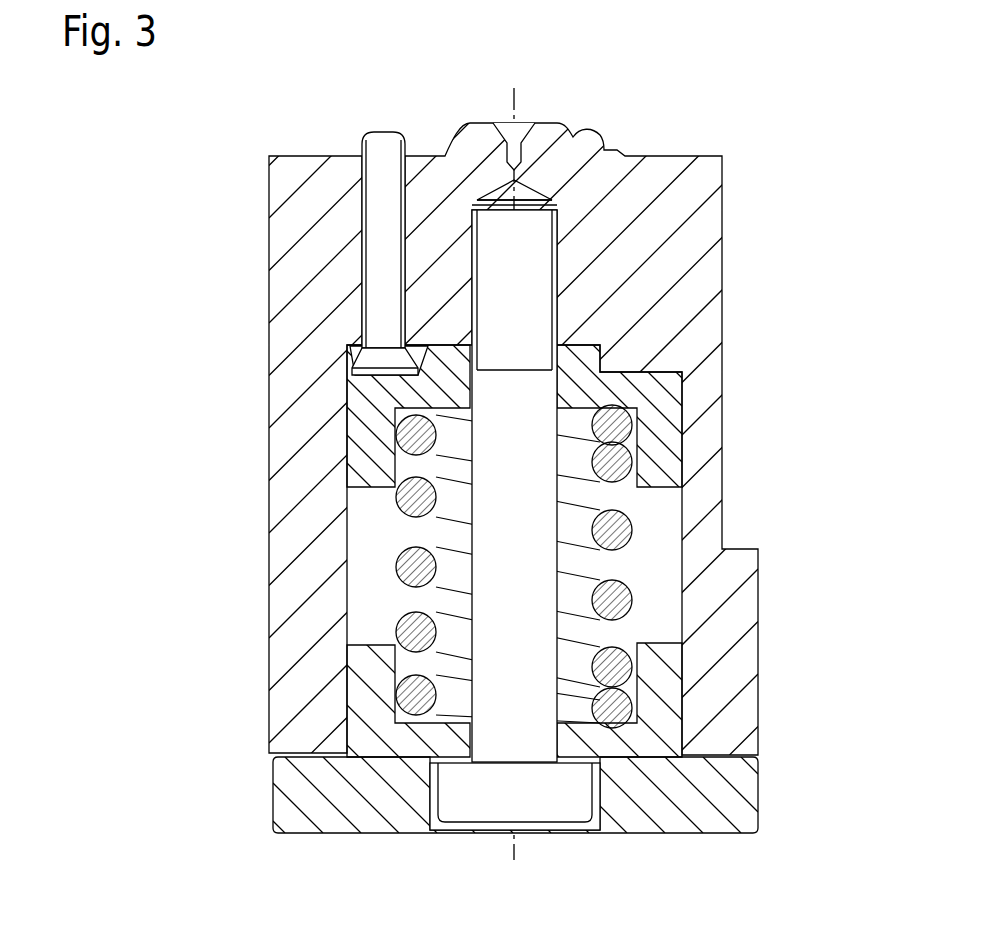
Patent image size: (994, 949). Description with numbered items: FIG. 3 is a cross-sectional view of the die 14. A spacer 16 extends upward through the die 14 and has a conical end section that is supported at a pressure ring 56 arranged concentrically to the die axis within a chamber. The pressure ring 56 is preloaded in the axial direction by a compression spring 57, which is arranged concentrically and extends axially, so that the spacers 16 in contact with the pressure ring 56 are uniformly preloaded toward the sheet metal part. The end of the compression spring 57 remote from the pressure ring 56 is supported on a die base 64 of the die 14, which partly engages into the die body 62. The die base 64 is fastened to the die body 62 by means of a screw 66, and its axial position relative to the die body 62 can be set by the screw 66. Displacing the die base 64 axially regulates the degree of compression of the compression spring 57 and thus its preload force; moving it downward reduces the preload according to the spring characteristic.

The die 14 is at (198, 831).
The spacers 16 is at (385, 240).
The pressure ring 56 is at (358, 431).
The compression spring 57 is at (628, 566).
The die body 62 is at (730, 598).
The die base 64 is at (648, 790).
The screw 66 is at (532, 732).